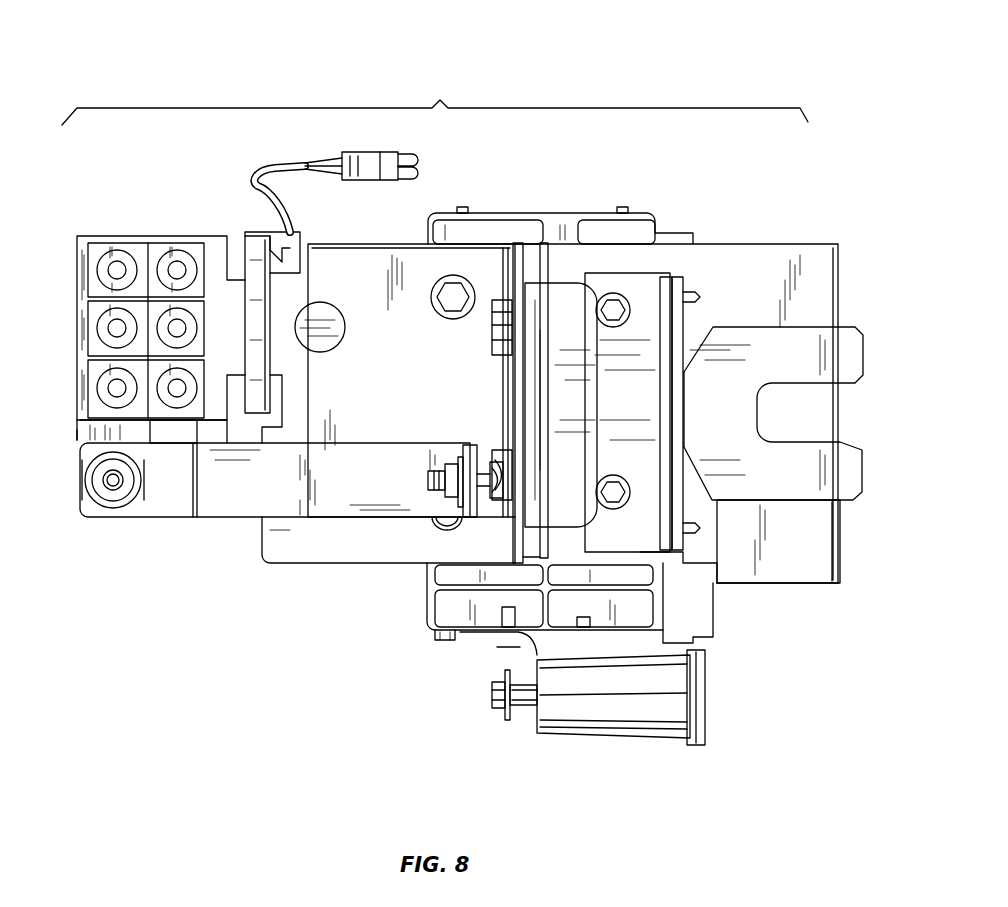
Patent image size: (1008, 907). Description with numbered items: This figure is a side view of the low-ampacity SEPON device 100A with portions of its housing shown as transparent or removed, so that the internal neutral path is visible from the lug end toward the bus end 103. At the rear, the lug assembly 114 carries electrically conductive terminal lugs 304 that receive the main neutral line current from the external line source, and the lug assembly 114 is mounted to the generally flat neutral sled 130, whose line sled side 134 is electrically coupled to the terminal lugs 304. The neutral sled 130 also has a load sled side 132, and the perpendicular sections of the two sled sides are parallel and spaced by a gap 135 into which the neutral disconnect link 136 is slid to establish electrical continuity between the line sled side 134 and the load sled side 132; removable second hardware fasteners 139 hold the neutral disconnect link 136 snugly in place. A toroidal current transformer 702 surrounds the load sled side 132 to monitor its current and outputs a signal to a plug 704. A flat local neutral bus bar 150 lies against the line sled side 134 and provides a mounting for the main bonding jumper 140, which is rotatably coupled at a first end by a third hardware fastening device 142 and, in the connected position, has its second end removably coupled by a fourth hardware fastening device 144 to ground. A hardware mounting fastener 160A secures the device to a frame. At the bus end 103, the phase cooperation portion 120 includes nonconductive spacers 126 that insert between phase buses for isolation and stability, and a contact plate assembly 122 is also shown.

The low-ampacity SEPON device 100A is at (178, 42).
The neutral sled 130 is at (441, 96).
The line sled side 134 is at (234, 293).
The current transformer 702 is at (257, 300).
The plug 704 is at (388, 184).
The load sled side 132 is at (733, 243).
The gap 135 is at (535, 268).
The neutral disconnect link 136 is at (565, 308).
The second hardware fasteners 139 is at (492, 452).
The contact plate assembly 122 is at (860, 240).
The bus end 103 is at (880, 286).
The phase cooperation portion 120 is at (878, 372).
The spacers 126 is at (830, 478).
The main bonding jumper 140 is at (223, 515).
The local neutral bus bar 150 is at (85, 437).
The third hardware fastening device 142 is at (113, 500).
The terminal lugs 304 is at (115, 276).
The lug assembly 114 is at (52, 372).
The fourth hardware fastening device 144 is at (430, 490).
The hardware mounting fastener 160A is at (617, 716).